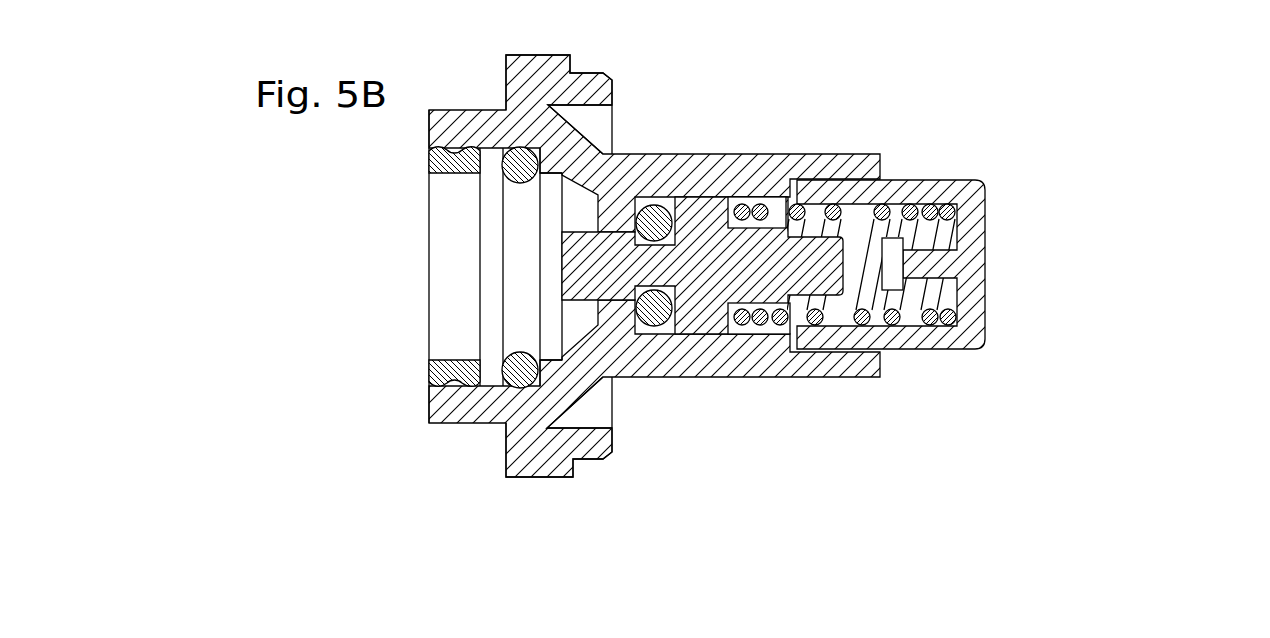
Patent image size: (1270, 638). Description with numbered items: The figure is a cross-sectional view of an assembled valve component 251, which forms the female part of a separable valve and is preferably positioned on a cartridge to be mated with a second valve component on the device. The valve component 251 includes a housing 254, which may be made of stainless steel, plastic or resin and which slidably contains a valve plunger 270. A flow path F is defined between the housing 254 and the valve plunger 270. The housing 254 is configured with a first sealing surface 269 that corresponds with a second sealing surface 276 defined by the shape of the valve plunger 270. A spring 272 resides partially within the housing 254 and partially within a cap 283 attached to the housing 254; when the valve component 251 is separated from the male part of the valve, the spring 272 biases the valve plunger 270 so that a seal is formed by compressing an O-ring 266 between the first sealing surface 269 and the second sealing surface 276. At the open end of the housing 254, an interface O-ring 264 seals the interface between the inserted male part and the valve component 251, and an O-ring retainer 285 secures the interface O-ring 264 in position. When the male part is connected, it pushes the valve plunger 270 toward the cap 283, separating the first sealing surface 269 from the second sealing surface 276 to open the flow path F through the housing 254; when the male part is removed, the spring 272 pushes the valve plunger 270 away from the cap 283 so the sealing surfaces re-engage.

The valve component 251 is at (1100, 229).
The housing 254 is at (590, 87).
The interface O-ring 264 is at (517, 392).
The O-ring 266 is at (670, 333).
The first sealing surface 269 is at (625, 340).
The valve plunger 270 is at (702, 212).
The spring 272 is at (893, 328).
The second sealing surface 276 is at (640, 205).
The cap 283 is at (940, 190).
The O-ring retainer 285 is at (430, 374).
The flow path F is at (770, 333).